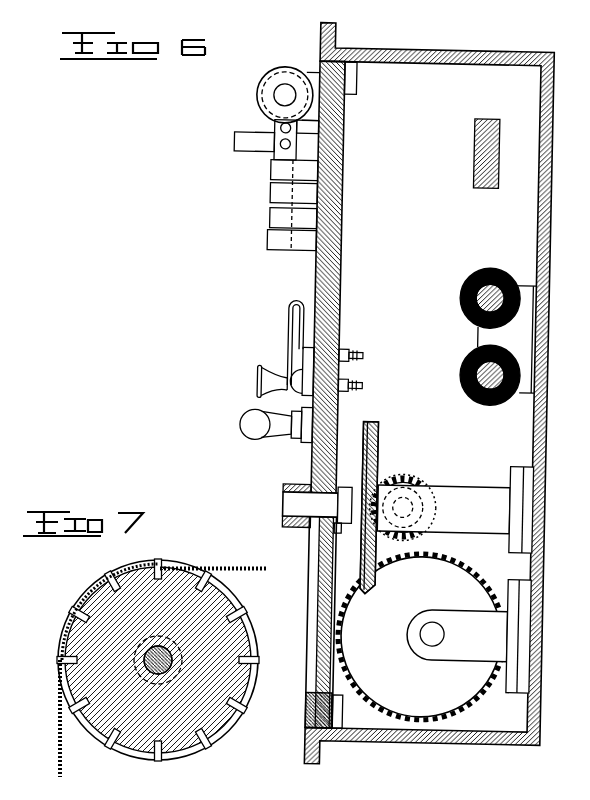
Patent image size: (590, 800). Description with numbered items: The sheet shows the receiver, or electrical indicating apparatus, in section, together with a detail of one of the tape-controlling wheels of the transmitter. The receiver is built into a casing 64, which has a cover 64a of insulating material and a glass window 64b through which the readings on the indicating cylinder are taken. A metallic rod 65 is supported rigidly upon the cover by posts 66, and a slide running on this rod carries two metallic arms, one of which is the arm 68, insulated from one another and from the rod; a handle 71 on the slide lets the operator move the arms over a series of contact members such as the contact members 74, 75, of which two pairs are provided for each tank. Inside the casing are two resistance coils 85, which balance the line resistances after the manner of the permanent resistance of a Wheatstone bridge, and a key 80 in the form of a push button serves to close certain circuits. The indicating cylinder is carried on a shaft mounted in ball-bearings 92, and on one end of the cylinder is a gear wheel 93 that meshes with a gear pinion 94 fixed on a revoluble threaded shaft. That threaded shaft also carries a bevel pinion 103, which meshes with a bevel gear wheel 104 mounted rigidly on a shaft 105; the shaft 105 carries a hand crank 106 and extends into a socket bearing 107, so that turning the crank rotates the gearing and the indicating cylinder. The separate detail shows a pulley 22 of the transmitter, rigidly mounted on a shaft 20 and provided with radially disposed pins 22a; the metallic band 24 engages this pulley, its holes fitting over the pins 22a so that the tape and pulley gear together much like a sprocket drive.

In FIG. 6, the casing 64 is at (521, 53).
In FIG. 6, the cover 64a is at (346, 258).
In FIG. 6, the glass window 64b is at (322, 565).
In FIG. 6, the posts 66 is at (269, 77).
In FIG. 6, the metallic rod 65 is at (272, 96).
In FIG. 6, the handle 71 is at (234, 141).
In FIG. 6, the contact member 75 is at (272, 172).
In FIG. 6, the contact member 74 is at (272, 195).
In FIG. 6, the metallic arm 68 is at (290, 233).
In FIG. 6, the resistance coils 85 is at (496, 270).
In FIG. 6, the key 80 is at (258, 381).
In FIG. 6, the hand crank 106 is at (240, 423).
In FIG. 6, the bevel gear wheel 104 is at (396, 421).
In FIG. 6, the gear pinion 94 is at (386, 468).
In FIG. 6, the bevel pinion 103 is at (425, 474).
In FIG. 6, the shaft 105 is at (317, 508).
In FIG. 6, the socket bearing 107 is at (455, 508).
In FIG. 6, the ball-bearings 92 is at (468, 636).
In FIG. 6, the gear wheel 93 is at (420, 636).
In FIG. 7, the metallic band 24 is at (246, 563).
In FIG. 7, the pulley 22 is at (237, 603).
In FIG. 7, the radially disposed pins 22a is at (246, 618).
In FIG. 7, the shaft 20 is at (172, 657).